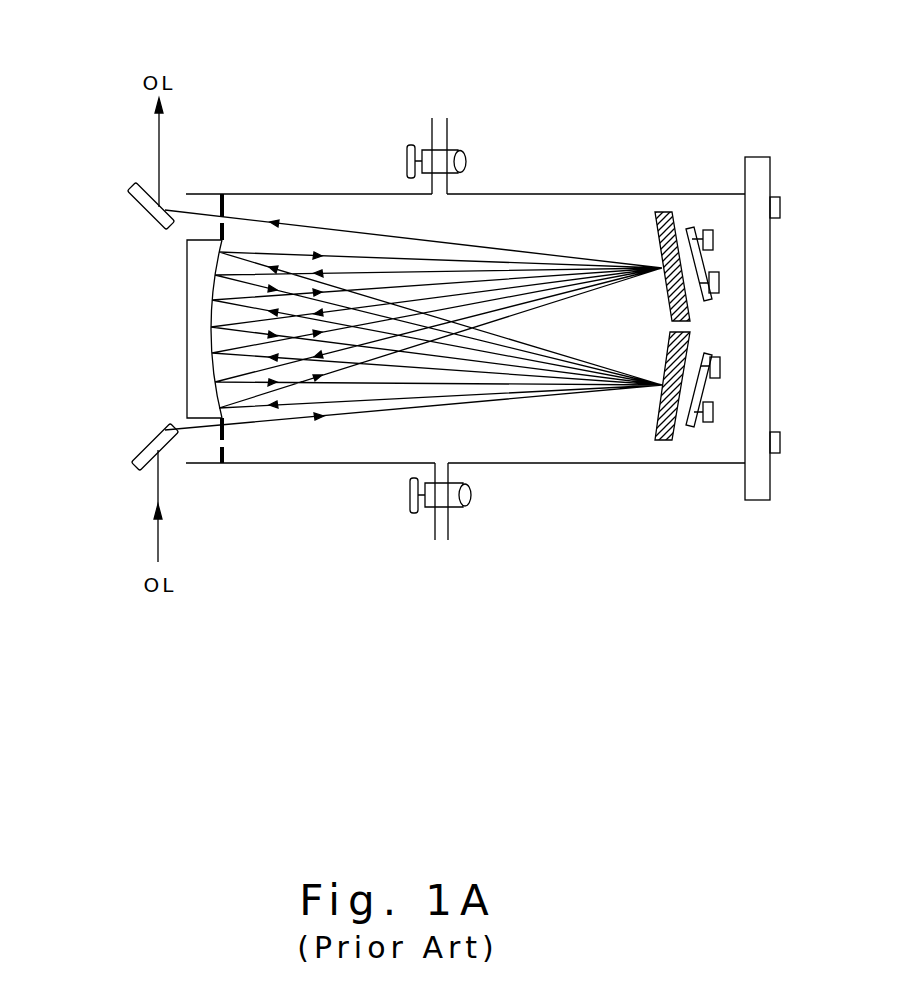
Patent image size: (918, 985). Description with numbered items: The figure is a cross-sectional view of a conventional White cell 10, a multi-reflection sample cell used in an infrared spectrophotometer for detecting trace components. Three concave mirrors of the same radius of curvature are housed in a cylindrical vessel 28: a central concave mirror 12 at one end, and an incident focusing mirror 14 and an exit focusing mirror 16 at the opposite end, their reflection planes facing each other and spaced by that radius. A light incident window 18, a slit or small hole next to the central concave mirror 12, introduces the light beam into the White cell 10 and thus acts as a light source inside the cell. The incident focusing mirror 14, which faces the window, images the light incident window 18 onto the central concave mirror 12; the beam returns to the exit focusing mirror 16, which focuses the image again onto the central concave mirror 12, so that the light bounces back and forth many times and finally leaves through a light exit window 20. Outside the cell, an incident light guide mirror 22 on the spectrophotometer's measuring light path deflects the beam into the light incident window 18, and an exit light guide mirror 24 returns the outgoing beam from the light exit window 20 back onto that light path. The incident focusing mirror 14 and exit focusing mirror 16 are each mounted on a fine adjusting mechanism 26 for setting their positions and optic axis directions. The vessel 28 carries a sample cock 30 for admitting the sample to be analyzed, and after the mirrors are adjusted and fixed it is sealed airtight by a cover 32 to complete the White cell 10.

The White cell 10 is at (465, 105).
The central concave mirror 12 is at (187, 330).
The incident focusing mirror 14 is at (660, 410).
The exit focusing mirror 16 is at (653, 218).
The light incident window 18 is at (228, 445).
The light exit window 20 is at (223, 217).
The incident light guide mirror 22 is at (130, 470).
The exit light guide mirror 24 is at (132, 185).
The fine adjusting mechanism 26 is at (688, 430).
The cylindrical vessel 28 is at (387, 465).
The sample cock 30 is at (468, 507).
The cover 32 is at (772, 170).